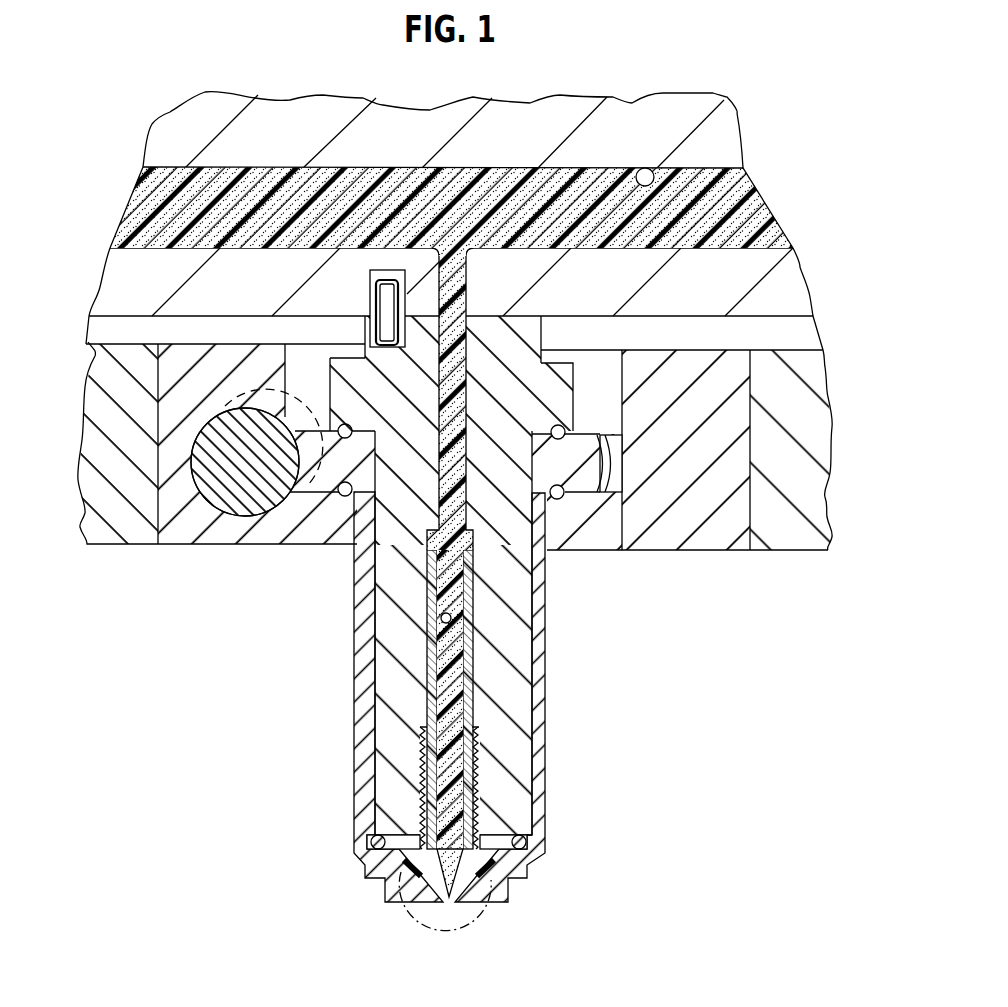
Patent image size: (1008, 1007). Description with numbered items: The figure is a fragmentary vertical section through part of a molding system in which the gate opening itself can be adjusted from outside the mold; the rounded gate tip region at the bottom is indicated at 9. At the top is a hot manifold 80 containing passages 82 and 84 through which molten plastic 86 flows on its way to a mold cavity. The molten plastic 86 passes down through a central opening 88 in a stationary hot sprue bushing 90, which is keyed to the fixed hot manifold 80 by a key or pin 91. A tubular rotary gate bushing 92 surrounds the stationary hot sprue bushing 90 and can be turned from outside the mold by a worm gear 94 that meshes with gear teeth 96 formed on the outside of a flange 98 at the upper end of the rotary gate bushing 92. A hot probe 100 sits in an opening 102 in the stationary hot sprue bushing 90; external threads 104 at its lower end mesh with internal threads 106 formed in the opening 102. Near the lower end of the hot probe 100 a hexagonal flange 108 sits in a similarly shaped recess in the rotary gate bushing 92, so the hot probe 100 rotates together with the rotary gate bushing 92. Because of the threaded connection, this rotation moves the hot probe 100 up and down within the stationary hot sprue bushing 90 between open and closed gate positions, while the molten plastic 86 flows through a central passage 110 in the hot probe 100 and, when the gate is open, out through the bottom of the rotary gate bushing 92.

The nozzle outlet tip 9 is at (459, 931).
The hot manifold 80 is at (728, 132).
The passage 82 is at (646, 168).
The passage 84 is at (470, 267).
The molten plastic 86 is at (753, 208).
The central opening 88 is at (563, 552).
The stationary hot sprue bushing 90 is at (510, 693).
The key or pin 91 is at (370, 292).
The rotary gate bushing 92 is at (547, 731).
The worm gear 94 is at (208, 520).
The gear teeth 96 is at (602, 463).
The flange 98 is at (576, 437).
The hot probe 100 is at (430, 678).
The opening 102 is at (464, 652).
The external threads 104 is at (477, 750).
The internal threads 106 is at (477, 797).
The hexagonal flange 108 is at (505, 862).
The central passage 110 is at (441, 617).